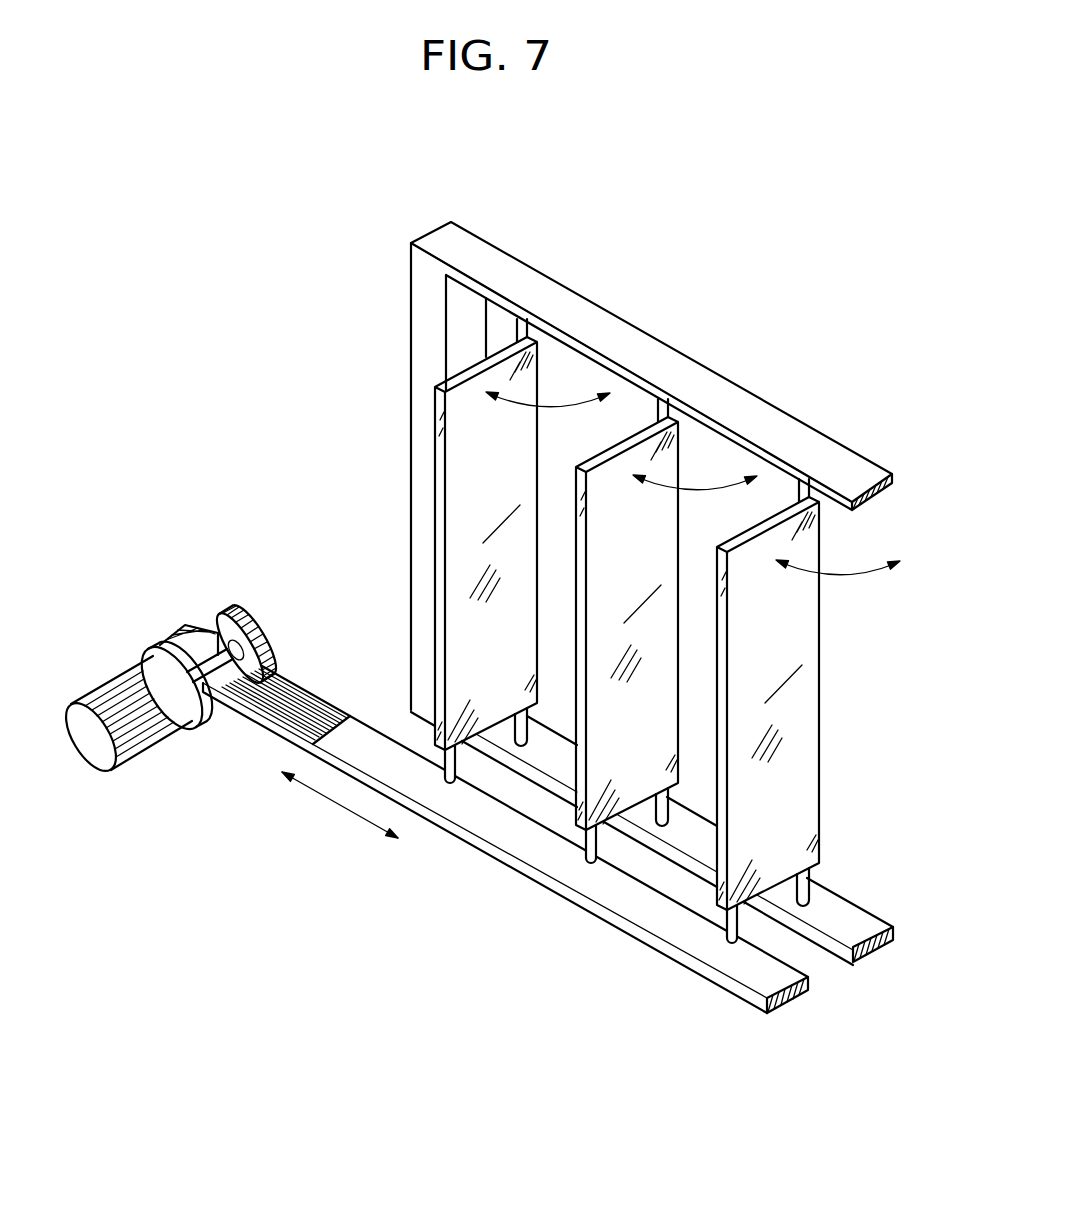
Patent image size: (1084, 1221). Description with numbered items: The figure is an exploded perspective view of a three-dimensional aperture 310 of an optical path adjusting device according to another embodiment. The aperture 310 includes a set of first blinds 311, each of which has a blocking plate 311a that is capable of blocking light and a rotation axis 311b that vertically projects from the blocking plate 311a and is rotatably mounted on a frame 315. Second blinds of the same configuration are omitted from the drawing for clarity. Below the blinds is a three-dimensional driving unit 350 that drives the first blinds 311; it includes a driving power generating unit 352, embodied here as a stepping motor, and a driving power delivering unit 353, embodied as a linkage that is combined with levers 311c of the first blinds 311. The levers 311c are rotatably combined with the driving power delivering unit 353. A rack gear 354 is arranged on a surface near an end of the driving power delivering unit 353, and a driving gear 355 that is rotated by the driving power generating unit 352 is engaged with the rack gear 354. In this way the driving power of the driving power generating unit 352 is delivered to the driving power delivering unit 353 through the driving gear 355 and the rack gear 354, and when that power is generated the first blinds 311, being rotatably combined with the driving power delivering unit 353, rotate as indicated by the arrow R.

The 3D aperture 310 is at (321, 201).
The first blinds 311 is at (296, 328).
The blocking plate 311a is at (463, 419).
The rotation axis 311b is at (517, 328).
The lever 311c is at (453, 783).
The frame 315 is at (712, 380).
The 3D driving unit 350 is at (155, 622).
The driving power generating unit 352 is at (147, 742).
The driving power delivering unit 353 is at (617, 893).
The rack gear 354 is at (313, 692).
The driving gear 355 is at (245, 612).